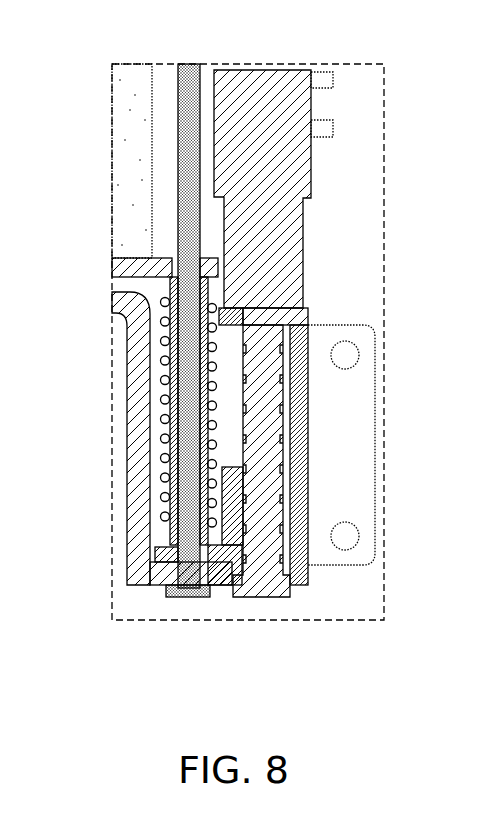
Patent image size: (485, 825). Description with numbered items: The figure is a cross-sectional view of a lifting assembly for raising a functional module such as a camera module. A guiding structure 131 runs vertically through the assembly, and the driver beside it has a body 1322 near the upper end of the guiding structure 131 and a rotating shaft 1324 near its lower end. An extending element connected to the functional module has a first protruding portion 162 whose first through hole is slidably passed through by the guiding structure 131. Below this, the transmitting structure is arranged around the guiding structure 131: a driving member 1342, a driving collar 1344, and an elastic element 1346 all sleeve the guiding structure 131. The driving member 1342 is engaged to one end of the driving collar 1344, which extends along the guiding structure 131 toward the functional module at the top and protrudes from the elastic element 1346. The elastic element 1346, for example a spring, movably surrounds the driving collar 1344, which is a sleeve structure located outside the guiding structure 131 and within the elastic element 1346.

The guiding structure 131 is at (193, 70).
The body 1322 is at (293, 165).
The first protruding portion 162 is at (112, 265).
The elastic element 1346 is at (148, 476).
The driving collar 1344 is at (168, 588).
The driving member 1342 is at (236, 567).
The rotating shaft 1324 is at (270, 498).